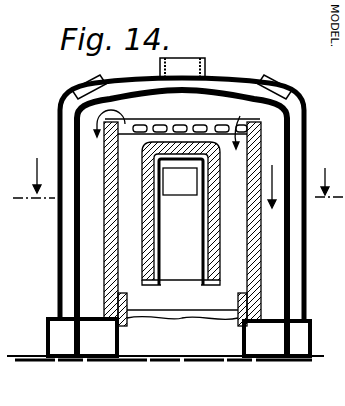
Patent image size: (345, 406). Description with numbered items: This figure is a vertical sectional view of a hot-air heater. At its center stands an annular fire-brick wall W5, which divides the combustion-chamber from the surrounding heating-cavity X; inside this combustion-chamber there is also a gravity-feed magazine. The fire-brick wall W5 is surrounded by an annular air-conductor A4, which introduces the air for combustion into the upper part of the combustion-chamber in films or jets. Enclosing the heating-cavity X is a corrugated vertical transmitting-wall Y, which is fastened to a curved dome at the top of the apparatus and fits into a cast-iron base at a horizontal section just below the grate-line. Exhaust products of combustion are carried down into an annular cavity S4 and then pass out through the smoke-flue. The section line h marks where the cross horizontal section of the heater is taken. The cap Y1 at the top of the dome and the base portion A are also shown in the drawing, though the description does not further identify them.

The corrugated vertical transmitting-wall Y is at (285, 246).
The cap of casing Y1 is at (198, 82).
The annular cavity S4 is at (97, 338).
The base A is at (63, 338).
The heating-cavity X is at (179, 224).
The annular air-conductor A4 is at (126, 114).
The annular fire-brick wall W5 is at (118, 235).
The section line h is at (179, 193).